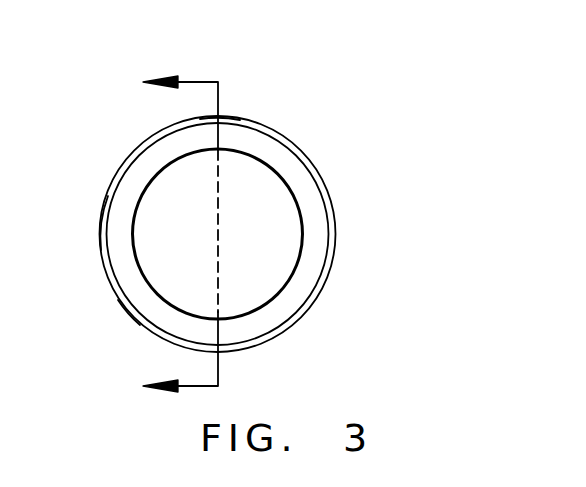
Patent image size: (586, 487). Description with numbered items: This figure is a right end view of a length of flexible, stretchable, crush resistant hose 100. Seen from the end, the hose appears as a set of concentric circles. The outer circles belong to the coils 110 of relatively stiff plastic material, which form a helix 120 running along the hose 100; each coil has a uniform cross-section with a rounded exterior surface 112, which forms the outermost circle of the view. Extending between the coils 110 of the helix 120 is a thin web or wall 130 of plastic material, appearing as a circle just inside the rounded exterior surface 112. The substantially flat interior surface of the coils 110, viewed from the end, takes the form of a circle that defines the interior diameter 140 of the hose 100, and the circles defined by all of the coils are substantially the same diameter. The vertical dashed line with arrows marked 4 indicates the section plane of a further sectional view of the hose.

The hose 100 is at (317, 112).
The coils 110 is at (120, 204).
The rounded exterior surface 112 is at (131, 307).
The helix 120 is at (236, 121).
The web 130 is at (299, 145).
The interior diameter 140 is at (279, 182).
The section line 4- 4 is at (168, 238).